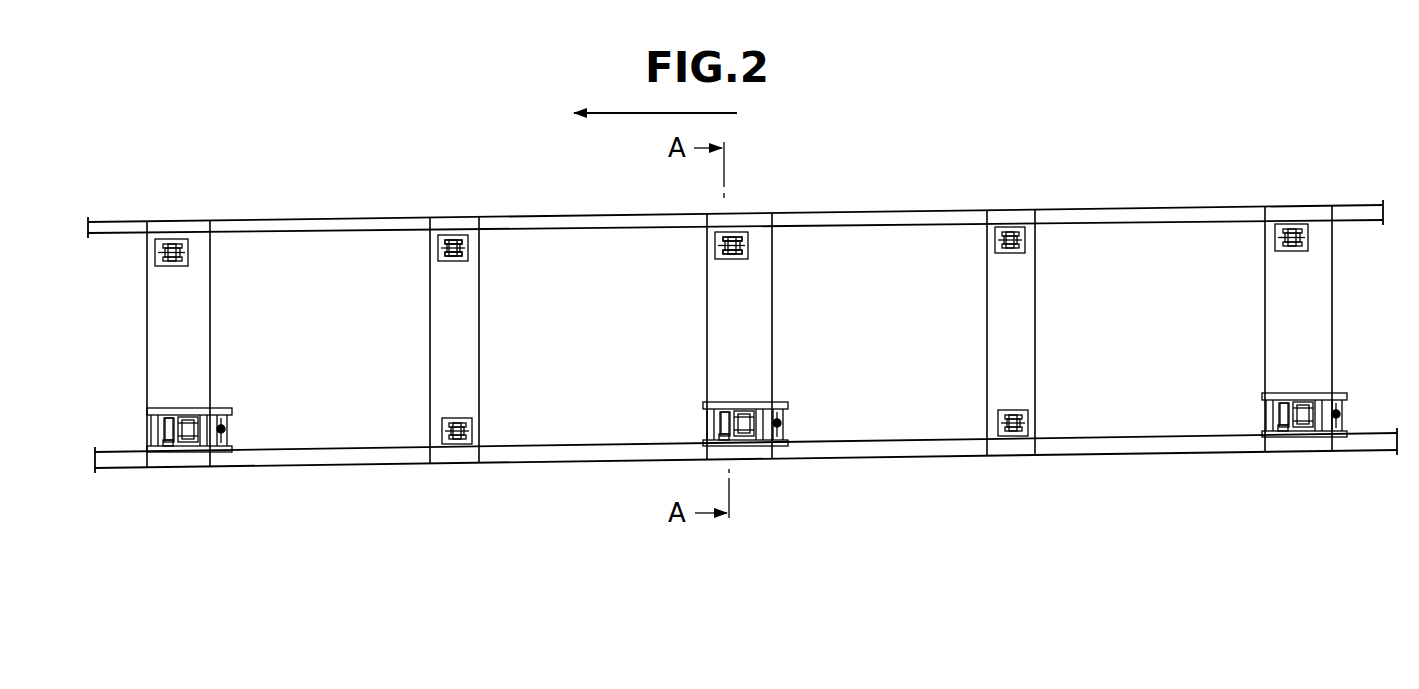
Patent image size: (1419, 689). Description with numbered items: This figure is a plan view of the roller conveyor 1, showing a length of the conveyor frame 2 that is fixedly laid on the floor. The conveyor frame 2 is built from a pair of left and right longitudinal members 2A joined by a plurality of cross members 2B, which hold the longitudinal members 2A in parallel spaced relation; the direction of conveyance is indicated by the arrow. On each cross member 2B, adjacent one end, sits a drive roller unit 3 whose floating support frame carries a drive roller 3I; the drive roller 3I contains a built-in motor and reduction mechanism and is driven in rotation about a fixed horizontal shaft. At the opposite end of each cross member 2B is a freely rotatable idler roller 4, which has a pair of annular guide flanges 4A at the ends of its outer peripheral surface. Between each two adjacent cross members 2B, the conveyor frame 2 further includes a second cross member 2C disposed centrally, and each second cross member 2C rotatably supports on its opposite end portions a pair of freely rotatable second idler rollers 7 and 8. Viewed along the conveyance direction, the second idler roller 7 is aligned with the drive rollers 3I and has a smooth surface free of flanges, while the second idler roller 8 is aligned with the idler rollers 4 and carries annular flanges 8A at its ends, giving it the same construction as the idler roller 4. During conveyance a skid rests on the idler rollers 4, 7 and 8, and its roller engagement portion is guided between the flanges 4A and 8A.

The roller conveyor 1 is at (1086, 204).
The conveyor frame 2 is at (1320, 199).
The longitudinal members 2A is at (870, 212).
The cross members 2B is at (198, 337).
The second cross members 2C is at (467, 355).
The drive roller units 3 is at (237, 416).
The drive roller 3I is at (167, 430).
The idler roller 4 is at (190, 249).
The annular guide flanges 4A is at (720, 233).
The second idler roller 7 is at (472, 432).
The second idler roller 8 is at (470, 244).
The flanges 8A is at (440, 238).